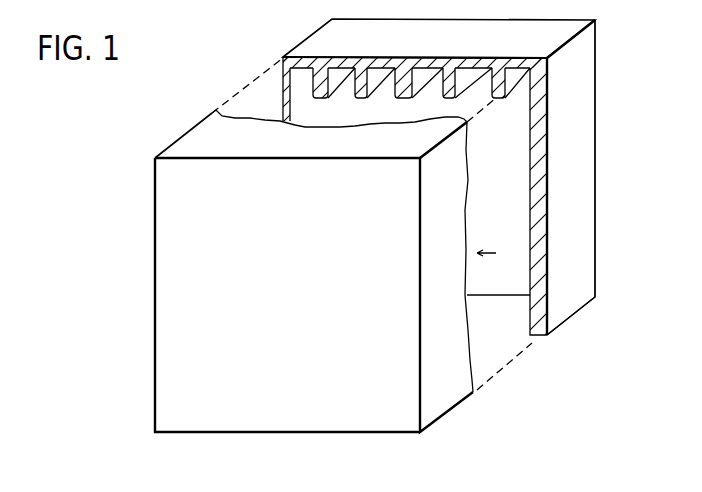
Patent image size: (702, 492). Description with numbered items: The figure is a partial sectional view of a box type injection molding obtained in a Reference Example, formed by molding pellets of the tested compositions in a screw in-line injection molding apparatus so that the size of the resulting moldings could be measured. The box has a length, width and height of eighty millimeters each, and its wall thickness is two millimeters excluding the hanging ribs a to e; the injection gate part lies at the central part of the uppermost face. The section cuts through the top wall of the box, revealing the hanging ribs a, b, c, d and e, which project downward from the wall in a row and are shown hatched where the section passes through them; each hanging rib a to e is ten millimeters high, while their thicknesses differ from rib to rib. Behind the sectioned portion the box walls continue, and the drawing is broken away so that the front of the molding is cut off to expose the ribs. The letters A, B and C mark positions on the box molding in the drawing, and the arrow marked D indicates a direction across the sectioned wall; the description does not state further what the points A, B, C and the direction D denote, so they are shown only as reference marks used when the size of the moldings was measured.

The hanging rib a is at (320, 93).
The hanging rib b is at (354, 93).
The hanging rib c is at (398, 93).
The hanging rib d is at (443, 93).
The hanging rib e is at (500, 93).
The corner A of the block A is at (287, 245).
The corner B of the block B is at (343, 265).
The side face C of the plate C is at (571, 177).
The direction of movement D is at (485, 266).